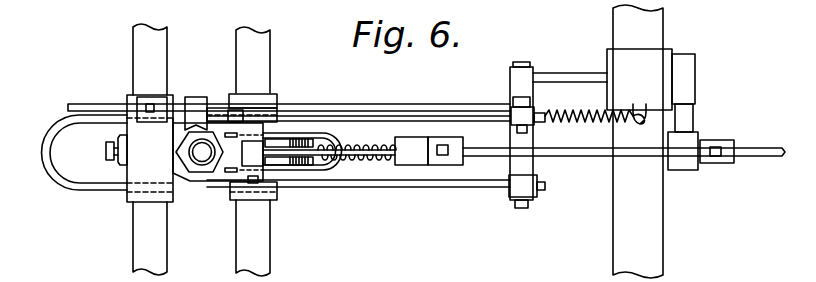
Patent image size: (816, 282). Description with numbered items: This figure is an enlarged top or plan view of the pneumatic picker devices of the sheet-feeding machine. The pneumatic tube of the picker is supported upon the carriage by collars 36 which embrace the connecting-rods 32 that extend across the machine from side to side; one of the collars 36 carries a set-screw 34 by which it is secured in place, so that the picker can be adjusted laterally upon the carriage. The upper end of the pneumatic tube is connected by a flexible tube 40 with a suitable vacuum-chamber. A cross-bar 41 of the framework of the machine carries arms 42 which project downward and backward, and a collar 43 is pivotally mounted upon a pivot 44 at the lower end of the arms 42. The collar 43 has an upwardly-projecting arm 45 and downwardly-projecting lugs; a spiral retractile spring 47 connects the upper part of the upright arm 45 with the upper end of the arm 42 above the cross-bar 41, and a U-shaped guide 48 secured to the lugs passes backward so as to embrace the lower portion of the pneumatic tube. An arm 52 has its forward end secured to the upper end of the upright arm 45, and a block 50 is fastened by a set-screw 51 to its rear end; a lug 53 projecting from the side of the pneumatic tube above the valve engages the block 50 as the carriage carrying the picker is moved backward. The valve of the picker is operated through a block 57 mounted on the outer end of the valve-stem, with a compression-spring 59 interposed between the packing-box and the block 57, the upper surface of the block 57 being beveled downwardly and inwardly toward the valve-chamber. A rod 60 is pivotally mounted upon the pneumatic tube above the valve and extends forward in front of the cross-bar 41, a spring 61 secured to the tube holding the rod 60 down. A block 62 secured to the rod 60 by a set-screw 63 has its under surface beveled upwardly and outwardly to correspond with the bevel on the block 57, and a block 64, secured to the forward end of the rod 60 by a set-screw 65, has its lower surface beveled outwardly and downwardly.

The connecting-rods 32 is at (133, 242).
The set-screw 34 is at (106, 152).
The collars 36 is at (238, 198).
The flexible tubes 40 is at (190, 150).
The cross-bar 41 is at (638, 141).
The arms 42 is at (560, 73).
The collar 43 is at (515, 165).
The pivot 44 is at (521, 208).
The upwardly-projecting arm 45 is at (520, 118).
The spiral retractile spring 47 is at (567, 118).
The U-shaped guide 48 is at (328, 116).
The block 50 is at (156, 100).
The set-screw 51 is at (146, 104).
The arm 52 is at (410, 106).
The lug 53 is at (195, 98).
The block 57 is at (412, 165).
The compression-spring 59 is at (362, 142).
The rod 60 is at (586, 157).
The spring 61 is at (285, 138).
The block 62 is at (455, 166).
The set-screw 63 is at (443, 156).
The block 64 is at (740, 140).
The set-screw 65 is at (717, 147).